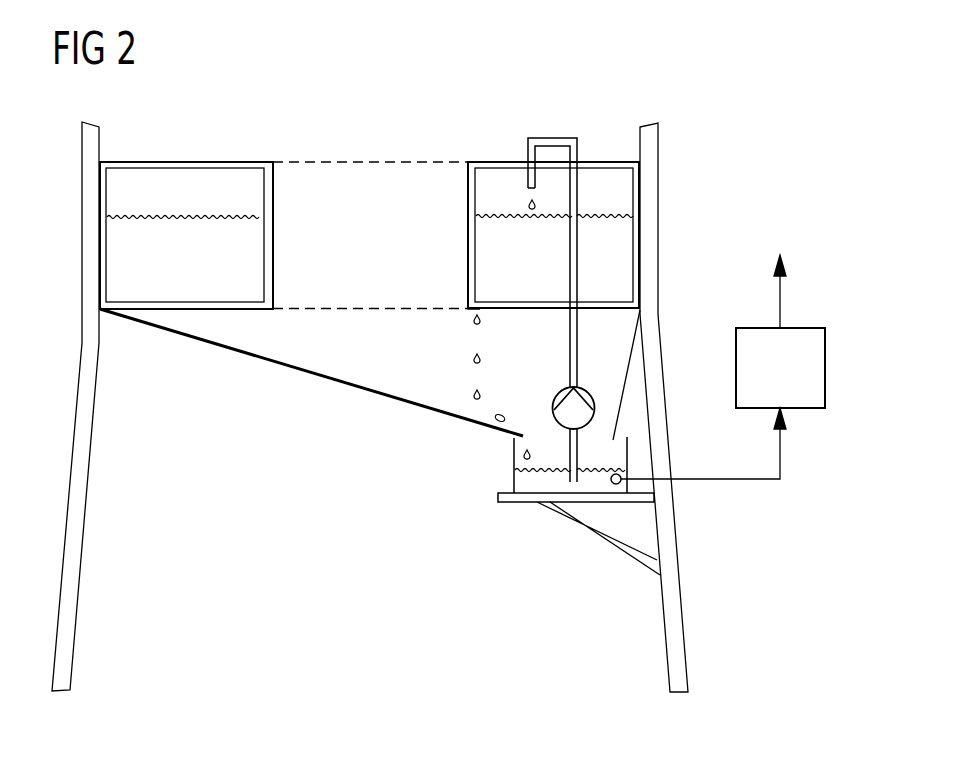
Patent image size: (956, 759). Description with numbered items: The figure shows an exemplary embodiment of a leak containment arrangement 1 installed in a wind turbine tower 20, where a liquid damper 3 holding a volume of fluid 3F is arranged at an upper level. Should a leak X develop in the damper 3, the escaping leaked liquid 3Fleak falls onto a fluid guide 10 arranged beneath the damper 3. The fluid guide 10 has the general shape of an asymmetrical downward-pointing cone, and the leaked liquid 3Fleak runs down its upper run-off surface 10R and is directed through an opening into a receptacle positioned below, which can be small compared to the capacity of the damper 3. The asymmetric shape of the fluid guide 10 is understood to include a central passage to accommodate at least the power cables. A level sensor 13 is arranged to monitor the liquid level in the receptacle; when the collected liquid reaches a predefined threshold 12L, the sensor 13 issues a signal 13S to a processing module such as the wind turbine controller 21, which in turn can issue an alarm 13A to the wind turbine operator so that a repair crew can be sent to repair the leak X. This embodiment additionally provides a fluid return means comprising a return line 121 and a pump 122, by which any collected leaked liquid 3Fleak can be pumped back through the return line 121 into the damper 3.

The leak containment arrangement 1 is at (253, 449).
The liquid damper 3 is at (533, 128).
The fluid 3F is at (186, 236).
The leaked liquid 3Fleak is at (472, 357).
The fluid guide 10 is at (335, 387).
The run-off surface 10R is at (306, 371).
The predefined threshold 12L is at (513, 479).
The level sensor 13 is at (617, 484).
The alarm 13A is at (778, 298).
The signal 13S is at (778, 455).
The wind turbine tower 20 is at (683, 597).
The wind turbine controller 21 is at (800, 328).
The return line 121 is at (555, 138).
The pump 122 is at (554, 408).
The leak X is at (476, 306).